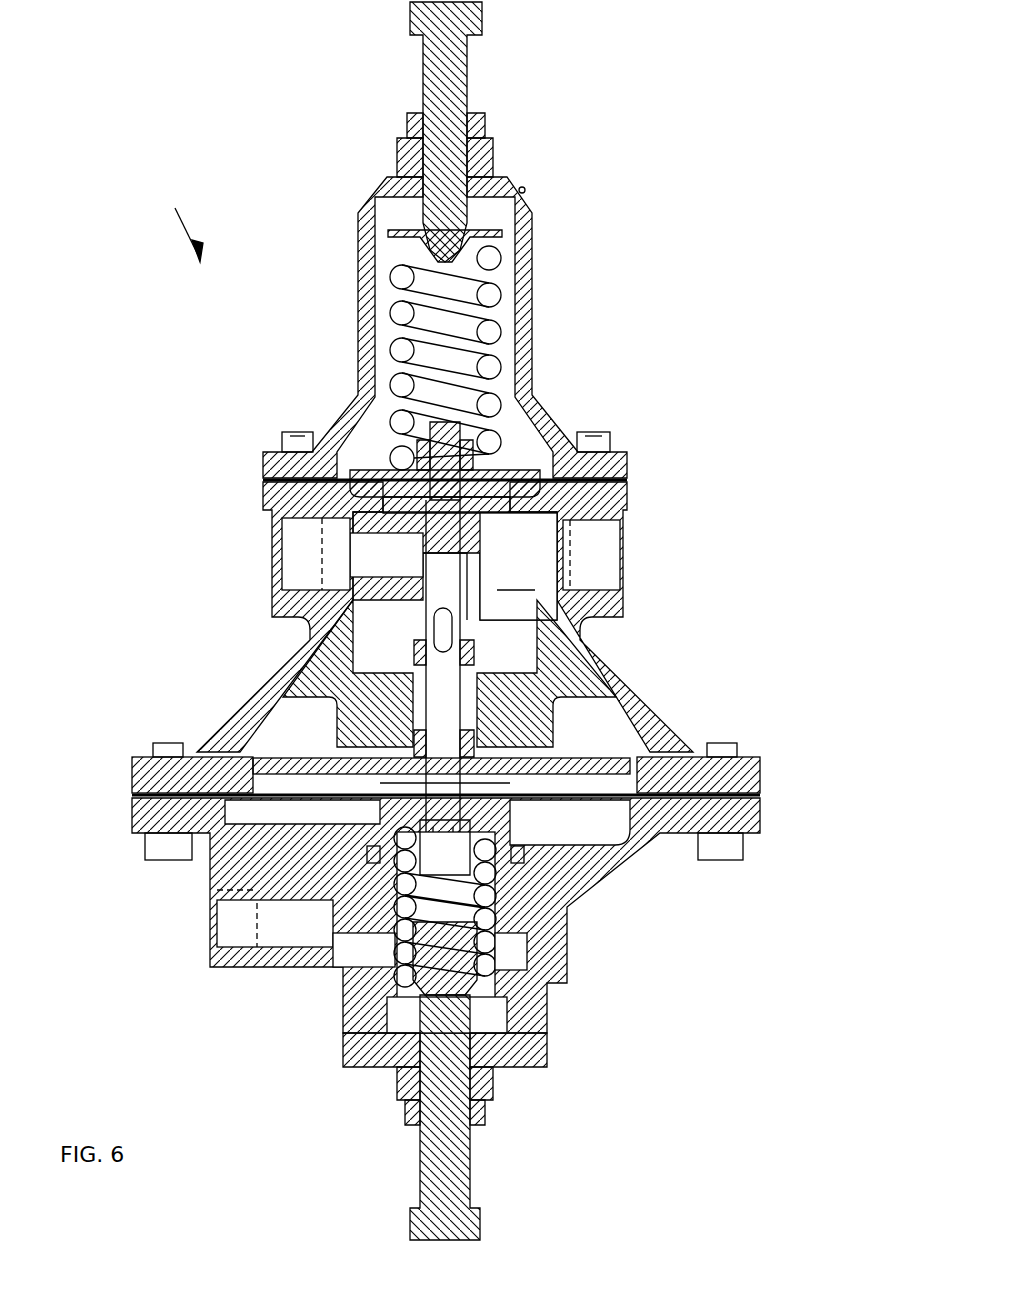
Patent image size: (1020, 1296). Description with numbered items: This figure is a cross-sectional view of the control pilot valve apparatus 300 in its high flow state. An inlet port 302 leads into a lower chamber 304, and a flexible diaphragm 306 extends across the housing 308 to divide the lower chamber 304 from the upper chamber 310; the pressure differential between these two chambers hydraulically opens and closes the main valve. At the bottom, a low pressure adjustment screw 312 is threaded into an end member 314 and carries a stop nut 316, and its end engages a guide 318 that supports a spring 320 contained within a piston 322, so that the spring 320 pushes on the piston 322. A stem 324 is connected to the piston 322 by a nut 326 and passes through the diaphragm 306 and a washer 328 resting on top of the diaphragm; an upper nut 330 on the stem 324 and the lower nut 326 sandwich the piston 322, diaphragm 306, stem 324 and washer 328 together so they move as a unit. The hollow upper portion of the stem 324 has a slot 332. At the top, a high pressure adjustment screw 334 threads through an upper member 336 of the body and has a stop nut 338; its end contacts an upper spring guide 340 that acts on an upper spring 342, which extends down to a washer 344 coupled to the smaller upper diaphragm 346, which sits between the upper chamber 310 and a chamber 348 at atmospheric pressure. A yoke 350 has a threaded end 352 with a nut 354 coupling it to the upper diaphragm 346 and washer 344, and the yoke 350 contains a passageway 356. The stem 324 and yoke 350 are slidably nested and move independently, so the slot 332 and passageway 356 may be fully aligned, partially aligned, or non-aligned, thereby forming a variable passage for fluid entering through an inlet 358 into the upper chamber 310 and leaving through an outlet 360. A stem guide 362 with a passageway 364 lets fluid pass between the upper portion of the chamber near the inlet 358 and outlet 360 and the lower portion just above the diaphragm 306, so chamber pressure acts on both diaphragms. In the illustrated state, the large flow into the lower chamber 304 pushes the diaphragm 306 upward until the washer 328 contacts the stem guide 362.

The control pilot valve apparatus 300 is at (174, 220).
The inlet port 302 is at (250, 893).
The lower chamber 304 is at (283, 917).
The flexible diaphragm 306 is at (253, 792).
The housing 308 is at (677, 747).
The upper chamber 310 is at (280, 725).
The low pressure adjustment screw 312 is at (450, 1183).
The end member 314 is at (510, 1060).
The stop nut 316 is at (410, 1123).
The guide 318 is at (447, 980).
The spring 320 is at (512, 932).
The piston 322 is at (515, 832).
The stem 324 is at (442, 787).
The nut 326 is at (380, 800).
The washer 328 is at (603, 763).
The upper nut 330 is at (350, 728).
The slot 332 is at (442, 630).
The high pressure adjustment screw 334 is at (458, 63).
The upper member 336 is at (400, 152).
The stop nut 338 is at (470, 123).
The upper spring guide 340 is at (490, 232).
The upper spring 342 is at (398, 275).
The washer 344 is at (398, 460).
The upper diaphragm 346 is at (347, 478).
The chamber 348 is at (375, 330).
The yoke 350 is at (527, 482).
The threaded end 352 is at (460, 418).
The nut 354 is at (500, 433).
The passageway 356 is at (470, 637).
The inlet 358 is at (292, 553).
The outlet 360 is at (605, 555).
The stem guide 362 is at (515, 700).
The passageway 364 is at (493, 710).